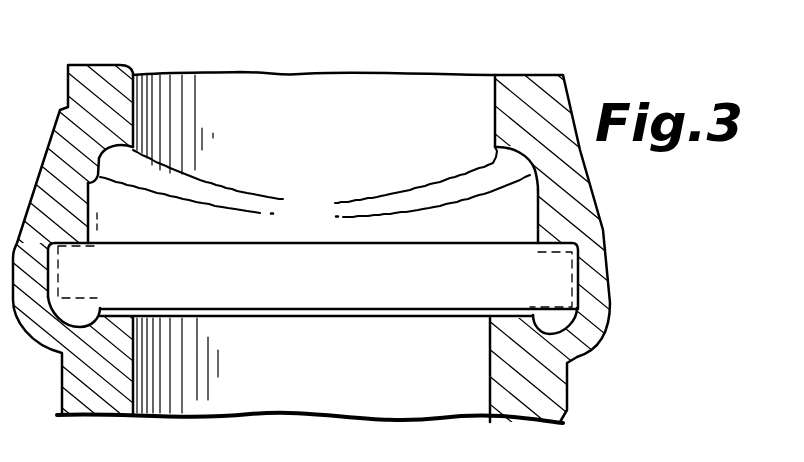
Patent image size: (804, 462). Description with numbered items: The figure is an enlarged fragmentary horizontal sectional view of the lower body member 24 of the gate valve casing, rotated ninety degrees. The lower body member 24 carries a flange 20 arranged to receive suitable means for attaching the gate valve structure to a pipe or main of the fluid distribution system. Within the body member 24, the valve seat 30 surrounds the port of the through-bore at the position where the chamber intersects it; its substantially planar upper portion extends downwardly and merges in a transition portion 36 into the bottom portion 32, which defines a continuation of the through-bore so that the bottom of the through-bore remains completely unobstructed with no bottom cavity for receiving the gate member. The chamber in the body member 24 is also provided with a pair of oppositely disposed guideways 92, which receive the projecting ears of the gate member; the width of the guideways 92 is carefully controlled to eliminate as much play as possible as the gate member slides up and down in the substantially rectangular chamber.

The flange 20 is at (600, 204).
The lower body member 24 is at (578, 92).
The valve seat 30 is at (180, 175).
The bottom portion 32 is at (318, 208).
The transition portion 36 is at (216, 198).
The guideways 92 is at (53, 271).